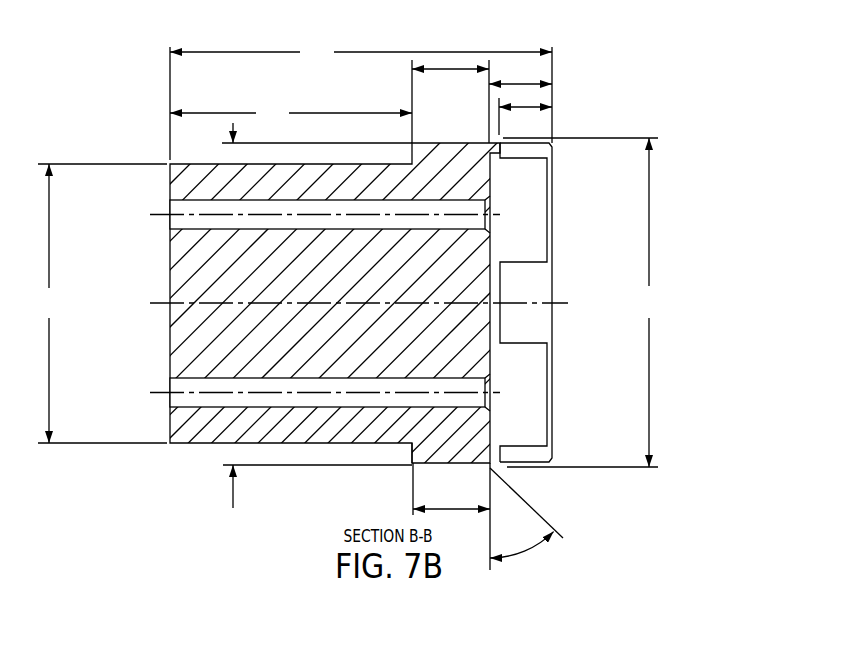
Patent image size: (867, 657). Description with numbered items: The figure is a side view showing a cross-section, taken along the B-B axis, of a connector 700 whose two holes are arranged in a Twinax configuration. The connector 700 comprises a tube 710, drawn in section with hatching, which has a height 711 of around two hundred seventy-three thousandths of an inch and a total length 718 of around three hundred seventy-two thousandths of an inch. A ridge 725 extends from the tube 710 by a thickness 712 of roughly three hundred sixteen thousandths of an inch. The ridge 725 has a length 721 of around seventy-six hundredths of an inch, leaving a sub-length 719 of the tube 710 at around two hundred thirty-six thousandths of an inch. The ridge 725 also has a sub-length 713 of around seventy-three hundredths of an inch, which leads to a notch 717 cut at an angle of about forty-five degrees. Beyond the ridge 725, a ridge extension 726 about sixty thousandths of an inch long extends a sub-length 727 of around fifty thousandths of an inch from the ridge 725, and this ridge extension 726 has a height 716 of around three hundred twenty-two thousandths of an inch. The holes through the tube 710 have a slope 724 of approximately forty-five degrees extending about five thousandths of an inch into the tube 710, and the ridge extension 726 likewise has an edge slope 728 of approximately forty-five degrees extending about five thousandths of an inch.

The connector 700 is at (603, 52).
The tube 710 is at (177, 428).
The height 711 is at (102, 303).
The thickness 712 is at (233, 495).
The sub-length 713 is at (455, 508).
The height 716 is at (583, 302).
The notch 717 is at (530, 553).
The total length 718 is at (361, 100).
The sub-length 719 is at (291, 101).
The length 721 is at (448, 67).
The slope 724 is at (500, 203).
The ridge 725 is at (410, 453).
The ridge extension 726 is at (517, 82).
The sub-length 727 is at (527, 108).
The edge slope 728 is at (551, 447).